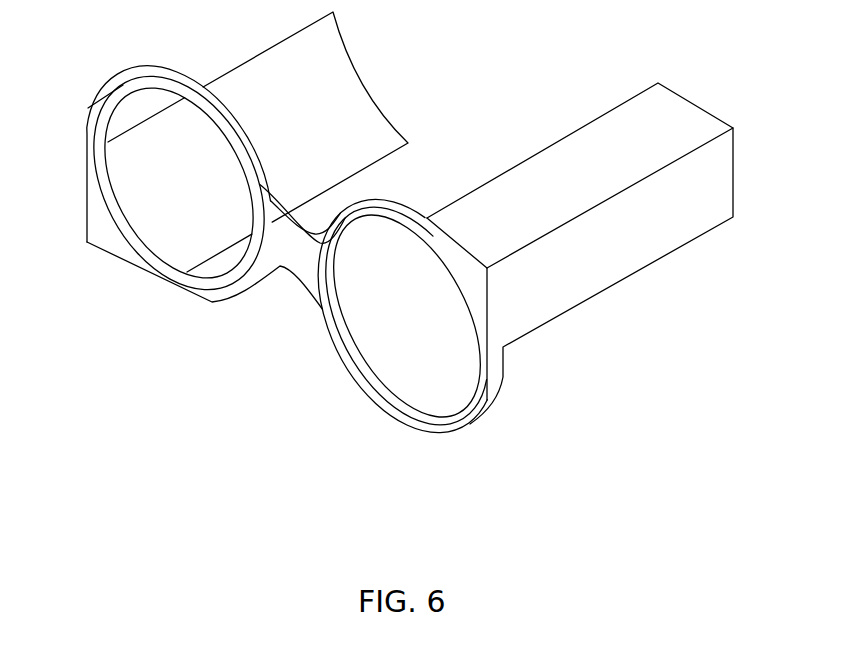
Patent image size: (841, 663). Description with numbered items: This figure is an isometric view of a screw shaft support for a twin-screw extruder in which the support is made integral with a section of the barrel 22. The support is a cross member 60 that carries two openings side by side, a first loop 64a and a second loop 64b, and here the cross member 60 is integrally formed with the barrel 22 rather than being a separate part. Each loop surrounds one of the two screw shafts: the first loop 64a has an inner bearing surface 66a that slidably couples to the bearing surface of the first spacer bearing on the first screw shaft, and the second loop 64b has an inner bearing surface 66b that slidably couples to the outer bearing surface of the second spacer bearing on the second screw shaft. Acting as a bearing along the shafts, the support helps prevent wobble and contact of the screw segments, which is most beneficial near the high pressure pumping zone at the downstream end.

The barrel 22 is at (665, 125).
The cross member 60 is at (287, 263).
The first loop 64a is at (93, 105).
The second loop 64b is at (427, 432).
The inner bearing surface 66a is at (143, 249).
The inner bearing surface 66b is at (369, 380).